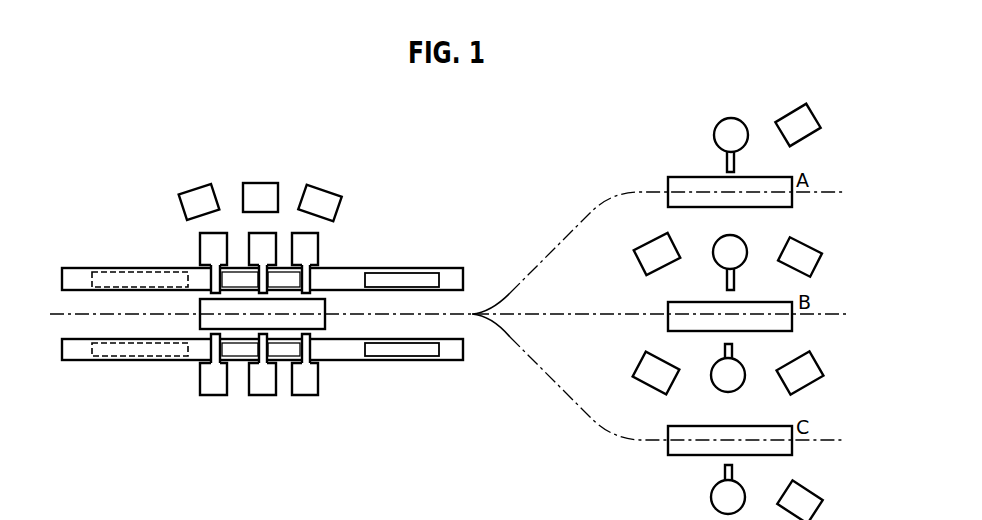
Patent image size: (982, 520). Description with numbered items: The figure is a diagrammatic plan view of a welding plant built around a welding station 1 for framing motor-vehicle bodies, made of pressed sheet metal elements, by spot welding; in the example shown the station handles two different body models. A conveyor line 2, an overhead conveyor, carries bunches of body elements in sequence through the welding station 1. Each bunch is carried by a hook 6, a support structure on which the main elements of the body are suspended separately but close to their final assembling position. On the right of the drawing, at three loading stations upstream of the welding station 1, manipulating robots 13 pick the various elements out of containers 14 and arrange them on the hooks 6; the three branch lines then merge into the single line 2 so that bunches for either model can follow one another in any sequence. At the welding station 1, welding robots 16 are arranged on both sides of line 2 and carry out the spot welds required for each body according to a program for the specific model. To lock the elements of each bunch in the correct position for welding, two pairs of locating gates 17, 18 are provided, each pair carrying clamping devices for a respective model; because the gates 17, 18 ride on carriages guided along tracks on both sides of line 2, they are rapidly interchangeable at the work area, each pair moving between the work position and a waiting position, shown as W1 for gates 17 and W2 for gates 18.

The welding station 1 is at (372, 199).
The conveyor line 2 is at (131, 270).
The hook 6 is at (200, 303).
The manipulating robot 13 is at (730, 127).
The container 14 is at (800, 118).
The welding robot 16 is at (207, 247).
The locating gate 17 is at (103, 270).
The locating gate 18 is at (410, 276).
The waiting position of gates 17 W1 is at (150, 318).
The waiting position of gates 18 W2 is at (418, 320).